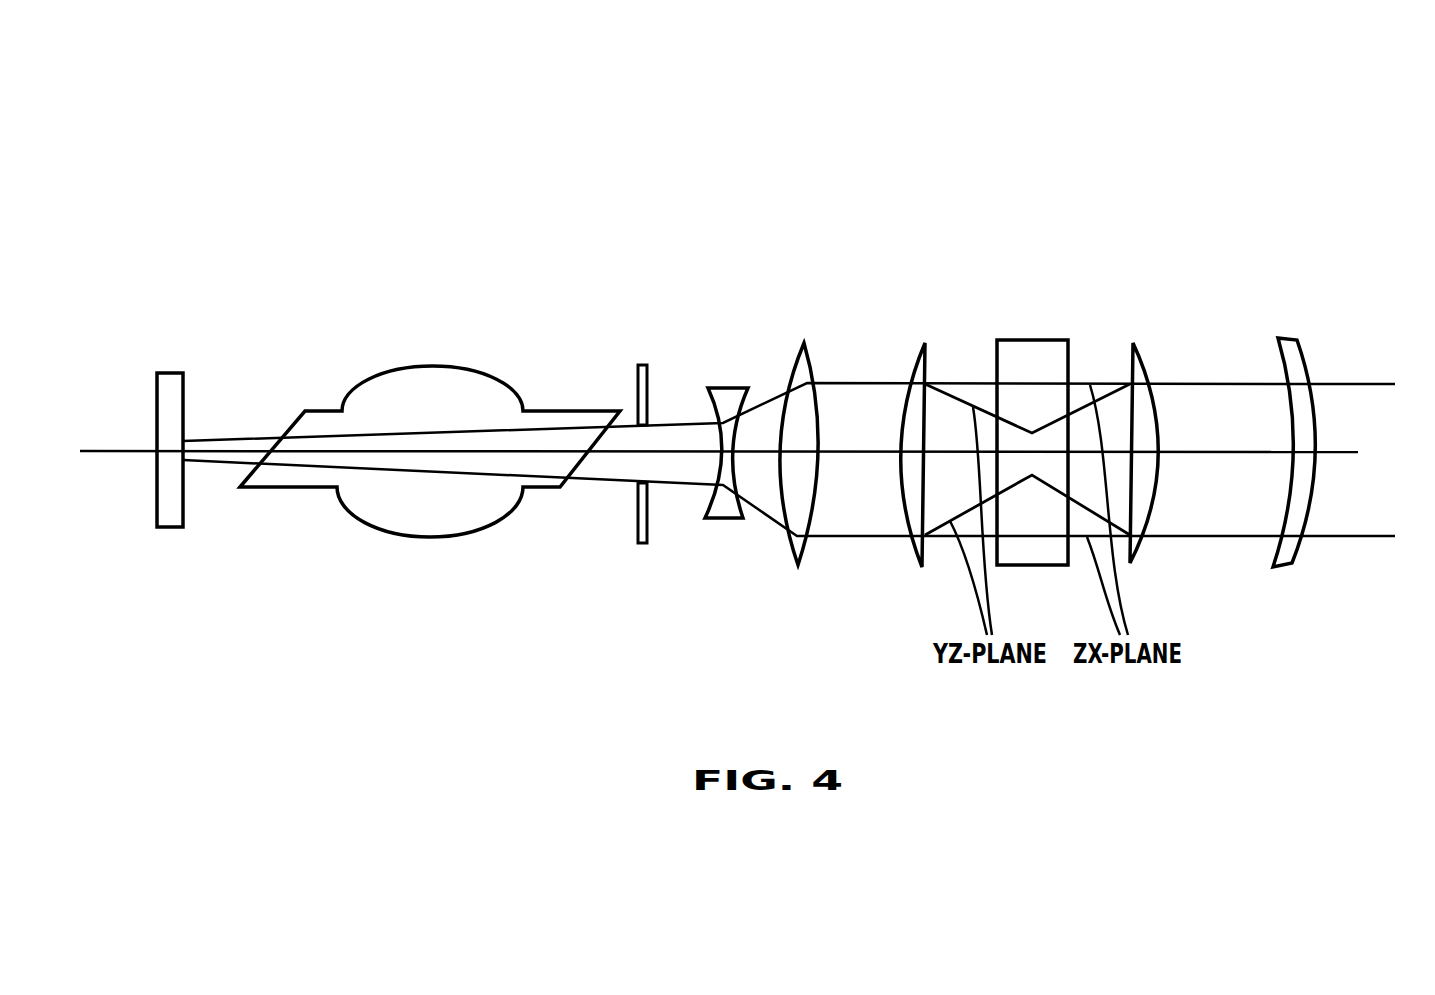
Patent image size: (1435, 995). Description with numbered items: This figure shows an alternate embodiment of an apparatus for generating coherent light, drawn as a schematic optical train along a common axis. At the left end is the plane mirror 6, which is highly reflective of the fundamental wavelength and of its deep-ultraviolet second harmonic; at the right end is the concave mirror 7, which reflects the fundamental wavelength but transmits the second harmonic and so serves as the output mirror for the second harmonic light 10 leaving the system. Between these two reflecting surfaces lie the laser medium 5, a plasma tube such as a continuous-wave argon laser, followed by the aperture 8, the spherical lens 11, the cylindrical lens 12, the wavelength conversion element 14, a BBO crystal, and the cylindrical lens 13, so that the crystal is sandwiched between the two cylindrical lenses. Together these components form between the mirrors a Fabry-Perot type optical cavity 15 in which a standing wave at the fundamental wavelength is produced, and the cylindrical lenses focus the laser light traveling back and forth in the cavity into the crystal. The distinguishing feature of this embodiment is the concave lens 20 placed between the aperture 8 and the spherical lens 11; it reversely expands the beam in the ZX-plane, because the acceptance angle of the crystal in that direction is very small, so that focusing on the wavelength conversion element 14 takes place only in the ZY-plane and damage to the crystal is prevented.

The laser medium 5 is at (447, 387).
The plane mirror 6 is at (181, 393).
The concave mirror 7 is at (1303, 351).
The aperture 8 is at (646, 525).
The second harmonic light 10 is at (1349, 480).
The spherical lens 11 is at (803, 362).
The cylindrical lens 12 is at (927, 360).
The cylindrical lens 13 is at (1138, 364).
The wavelength conversion element 14 is at (1037, 348).
The optical cavity 15 is at (868, 563).
The concave lens 20 is at (722, 392).